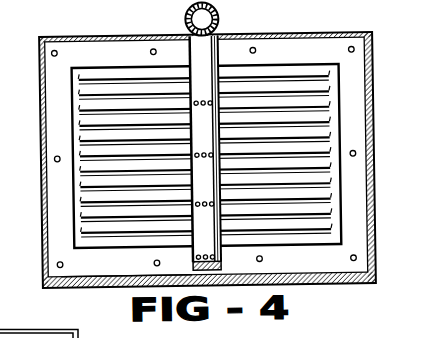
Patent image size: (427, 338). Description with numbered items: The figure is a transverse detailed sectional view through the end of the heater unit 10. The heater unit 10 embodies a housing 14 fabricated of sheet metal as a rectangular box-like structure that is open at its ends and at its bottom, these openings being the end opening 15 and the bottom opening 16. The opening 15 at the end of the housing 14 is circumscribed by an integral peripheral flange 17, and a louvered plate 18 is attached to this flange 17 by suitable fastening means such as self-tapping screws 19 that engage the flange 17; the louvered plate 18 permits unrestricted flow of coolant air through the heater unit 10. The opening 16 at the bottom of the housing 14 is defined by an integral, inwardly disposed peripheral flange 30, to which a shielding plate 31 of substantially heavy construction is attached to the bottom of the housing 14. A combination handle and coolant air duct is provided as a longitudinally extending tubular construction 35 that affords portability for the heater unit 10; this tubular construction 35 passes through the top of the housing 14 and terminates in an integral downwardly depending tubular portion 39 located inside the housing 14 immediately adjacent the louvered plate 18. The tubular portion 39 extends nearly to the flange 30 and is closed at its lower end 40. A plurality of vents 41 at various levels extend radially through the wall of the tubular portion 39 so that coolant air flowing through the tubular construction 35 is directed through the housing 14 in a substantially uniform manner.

The heater unit 10 is at (303, 29).
The housing 14 is at (79, 35).
The opening 15 is at (342, 190).
The opening 16 is at (100, 273).
The peripheral flange 17 is at (65, 106).
The louvered plate 18 is at (321, 89).
The self-tapping screw 19 is at (56, 160).
The peripheral flange 30 is at (67, 274).
The shielding plate 31 is at (312, 285).
The tubular construction 35 is at (223, 11).
The tubular portion 39 is at (212, 88).
The lower end 40 is at (218, 260).
The vents 41 is at (205, 106).